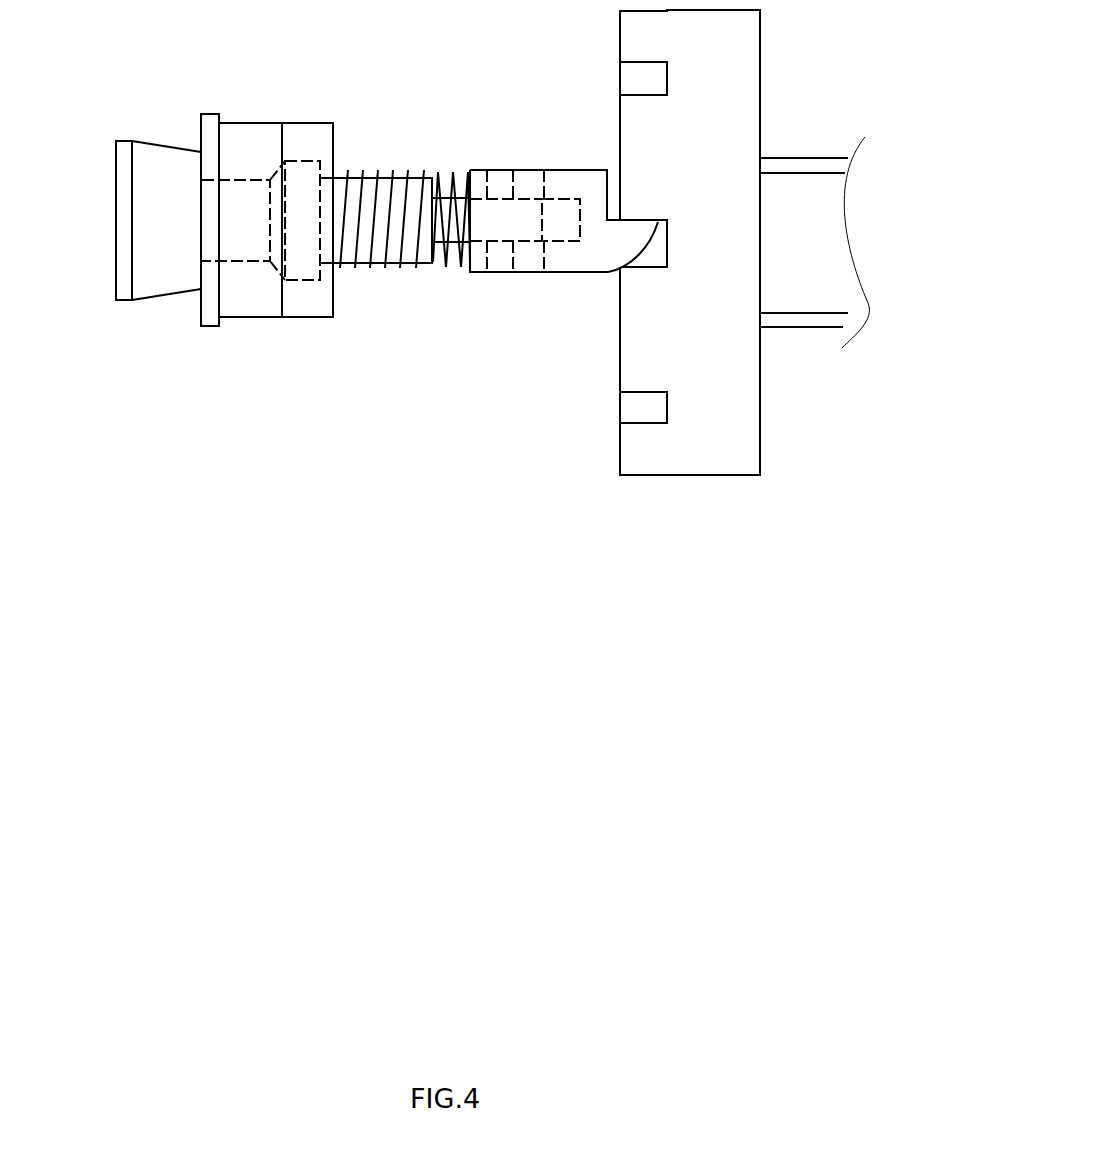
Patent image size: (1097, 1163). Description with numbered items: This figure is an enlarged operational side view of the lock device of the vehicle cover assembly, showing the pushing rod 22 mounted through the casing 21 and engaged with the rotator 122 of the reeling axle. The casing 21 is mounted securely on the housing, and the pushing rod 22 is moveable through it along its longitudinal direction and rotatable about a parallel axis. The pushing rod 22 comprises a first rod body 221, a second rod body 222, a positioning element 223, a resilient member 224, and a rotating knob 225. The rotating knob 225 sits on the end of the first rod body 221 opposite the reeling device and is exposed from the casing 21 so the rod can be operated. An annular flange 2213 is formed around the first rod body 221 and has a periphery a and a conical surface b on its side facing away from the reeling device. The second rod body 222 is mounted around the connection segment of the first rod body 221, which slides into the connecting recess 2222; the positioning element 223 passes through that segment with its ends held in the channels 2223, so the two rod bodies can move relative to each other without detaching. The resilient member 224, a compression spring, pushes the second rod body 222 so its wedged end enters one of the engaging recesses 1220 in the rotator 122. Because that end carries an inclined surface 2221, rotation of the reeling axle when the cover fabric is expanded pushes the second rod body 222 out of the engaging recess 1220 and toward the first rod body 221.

The pushing rod 22 is at (120, 234).
The rotating knob 225 is at (158, 155).
The casing 21 is at (258, 223).
The annular flange 2213 is at (245, 373).
The periphery a is at (233, 373).
The conical surface b is at (275, 237).
The first rod body 221 is at (388, 233).
The resilient member 224 is at (378, 178).
The positioning element 223 is at (500, 262).
The second rod body 222 is at (539, 263).
The channel 2223 is at (529, 171).
The connecting recess 2222 is at (576, 198).
The inclined surface 2221 is at (632, 247).
The rotator 122 is at (683, 274).
The engaging recess 1220 is at (635, 410).